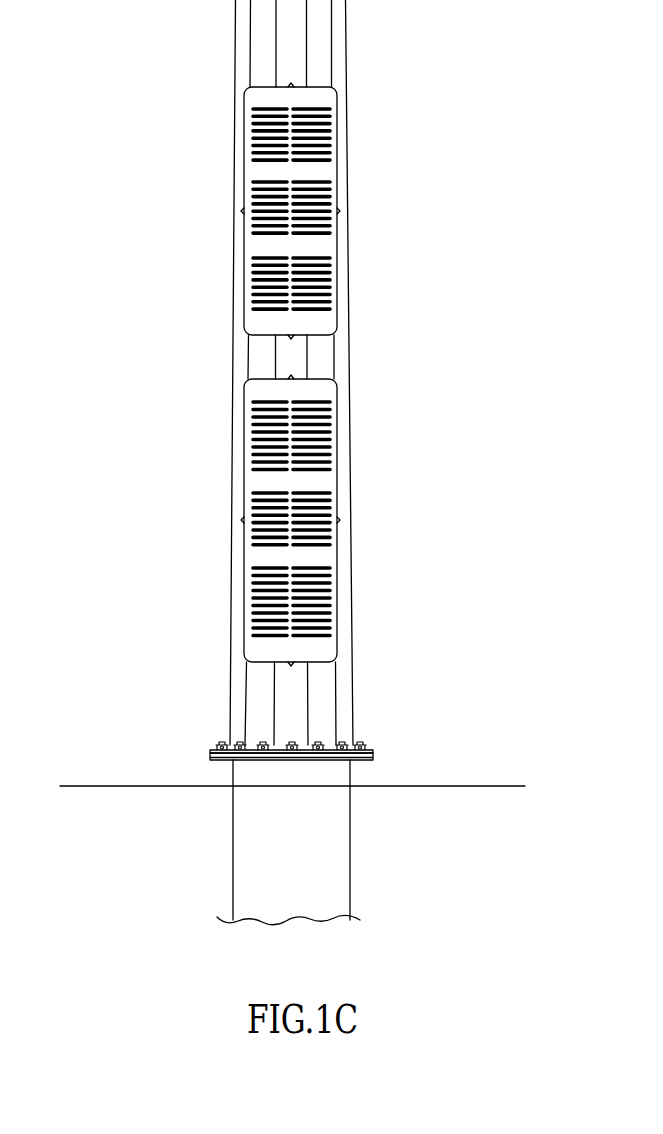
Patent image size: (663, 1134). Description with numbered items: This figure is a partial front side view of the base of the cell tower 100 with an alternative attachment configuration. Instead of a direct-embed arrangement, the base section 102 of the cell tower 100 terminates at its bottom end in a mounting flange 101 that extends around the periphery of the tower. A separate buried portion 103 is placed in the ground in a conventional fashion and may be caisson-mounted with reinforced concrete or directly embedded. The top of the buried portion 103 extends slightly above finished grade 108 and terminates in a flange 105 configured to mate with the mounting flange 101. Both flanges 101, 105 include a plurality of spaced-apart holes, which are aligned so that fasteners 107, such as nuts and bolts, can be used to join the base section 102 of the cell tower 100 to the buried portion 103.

The cell tower 100 is at (117, 187).
The mounting flange 101 is at (373, 750).
The base section 102 is at (346, 33).
The buried portion 103 is at (351, 858).
The flange 105 is at (373, 757).
The fasteners 107 is at (263, 745).
The finished grade 108 is at (493, 786).